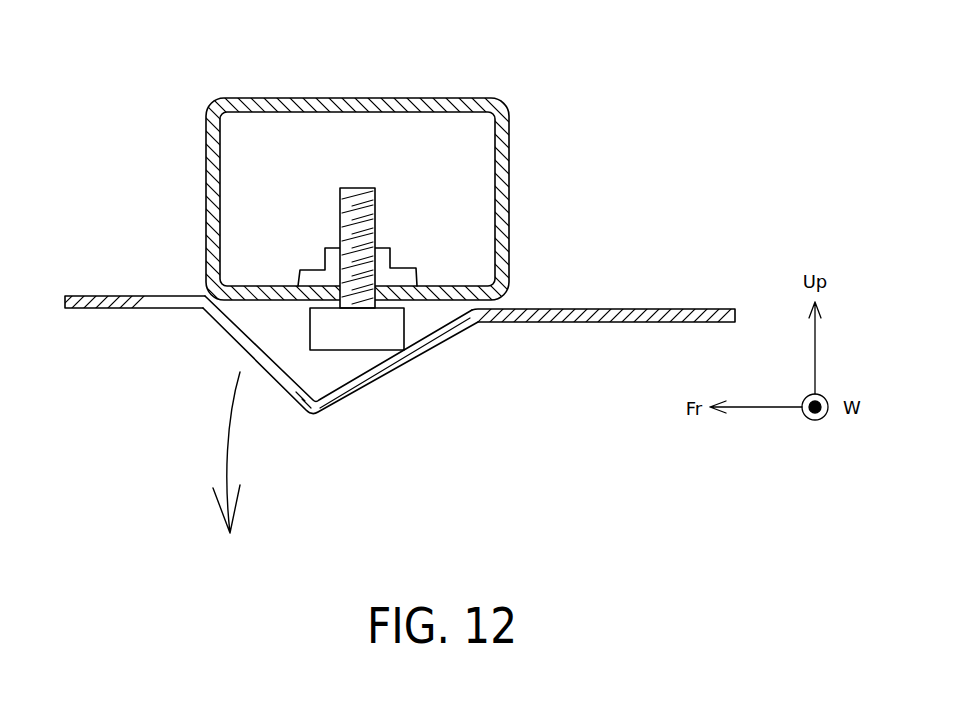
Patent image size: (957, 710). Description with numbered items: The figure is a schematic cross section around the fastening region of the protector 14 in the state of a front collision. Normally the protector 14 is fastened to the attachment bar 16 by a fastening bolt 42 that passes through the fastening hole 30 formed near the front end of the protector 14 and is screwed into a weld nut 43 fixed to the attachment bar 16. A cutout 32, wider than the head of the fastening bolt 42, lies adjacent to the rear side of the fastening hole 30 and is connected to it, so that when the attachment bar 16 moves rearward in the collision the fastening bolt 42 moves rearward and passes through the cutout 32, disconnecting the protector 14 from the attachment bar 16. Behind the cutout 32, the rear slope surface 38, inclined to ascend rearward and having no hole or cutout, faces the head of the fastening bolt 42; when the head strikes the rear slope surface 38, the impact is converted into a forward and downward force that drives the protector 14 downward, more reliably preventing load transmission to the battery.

The protector 14 is at (598, 309).
The attachment bar 16 is at (380, 98).
The fastening hole 30 is at (148, 298).
The cutout 32 is at (268, 370).
The rear slope surface 38 is at (398, 365).
The fastening bolt 42 is at (338, 230).
The weld nut 43 is at (397, 273).